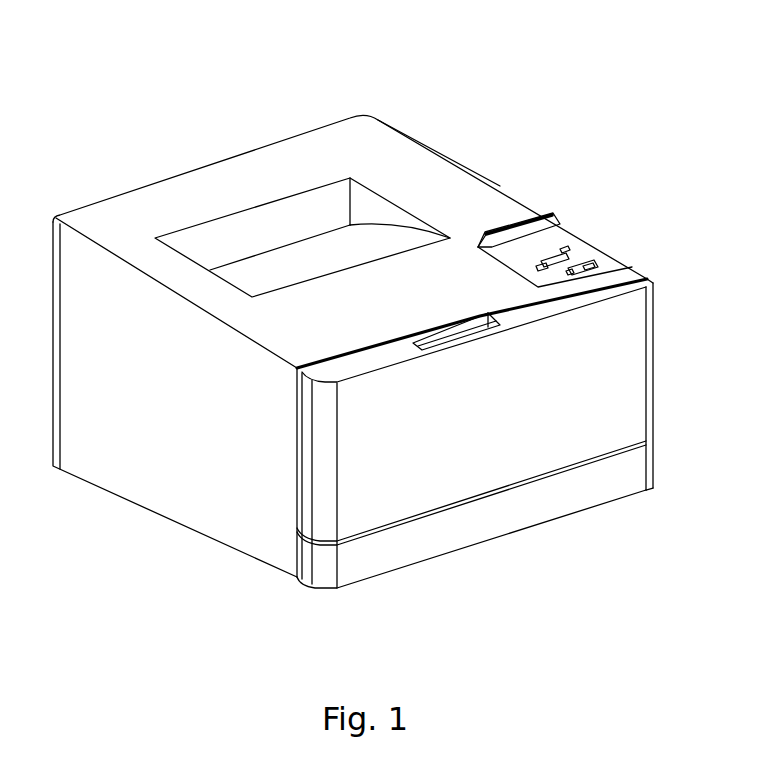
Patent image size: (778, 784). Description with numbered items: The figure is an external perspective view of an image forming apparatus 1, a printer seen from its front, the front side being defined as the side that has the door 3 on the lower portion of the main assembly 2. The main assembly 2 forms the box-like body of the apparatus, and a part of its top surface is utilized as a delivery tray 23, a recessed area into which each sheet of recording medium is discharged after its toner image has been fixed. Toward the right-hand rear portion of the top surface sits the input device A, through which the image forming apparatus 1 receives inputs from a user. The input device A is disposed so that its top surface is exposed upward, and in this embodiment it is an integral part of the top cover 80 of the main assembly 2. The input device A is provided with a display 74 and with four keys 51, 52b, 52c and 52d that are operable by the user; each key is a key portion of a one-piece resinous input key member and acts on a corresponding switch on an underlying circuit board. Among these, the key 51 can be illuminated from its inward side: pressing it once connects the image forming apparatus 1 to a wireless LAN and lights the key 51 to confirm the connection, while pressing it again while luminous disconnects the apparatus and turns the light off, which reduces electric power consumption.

The image forming apparatus 1 is at (372, 296).
The main assembly 2 is at (452, 177).
The top cover 80 is at (396, 155).
The delivery tray 23 is at (276, 277).
The door 3 is at (521, 452).
The key 51 is at (585, 191).
The display 74 is at (512, 232).
The key 52b is at (548, 255).
The key 52c is at (598, 263).
The key 52d is at (572, 250).
The input device A is at (581, 244).